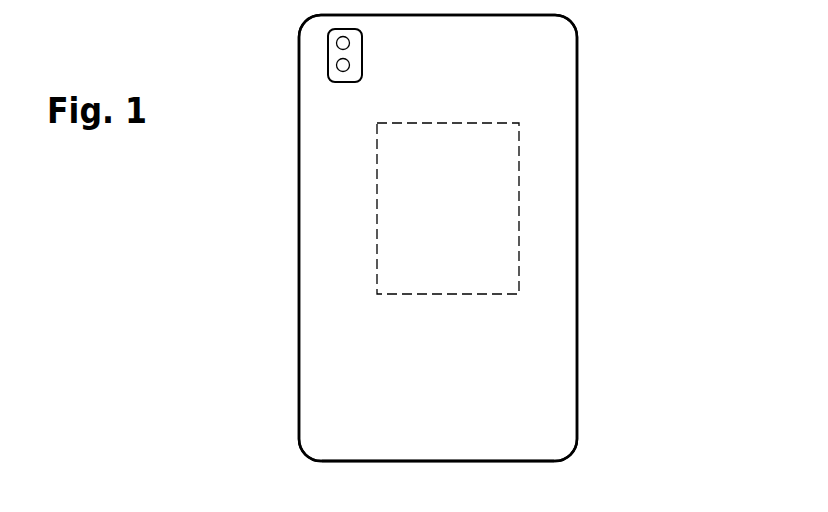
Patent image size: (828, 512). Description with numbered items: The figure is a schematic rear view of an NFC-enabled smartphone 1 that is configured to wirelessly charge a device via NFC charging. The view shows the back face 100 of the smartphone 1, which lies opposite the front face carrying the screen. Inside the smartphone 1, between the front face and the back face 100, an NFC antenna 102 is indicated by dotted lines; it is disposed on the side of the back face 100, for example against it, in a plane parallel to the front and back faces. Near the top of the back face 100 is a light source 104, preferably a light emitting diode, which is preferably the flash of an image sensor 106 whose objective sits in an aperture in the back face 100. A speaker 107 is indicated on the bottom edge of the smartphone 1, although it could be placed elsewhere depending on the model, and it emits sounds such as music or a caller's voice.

The smartphone 1 is at (613, 53).
The back face 100 is at (548, 429).
The NFC antenna 102 is at (519, 237).
The light source 104 is at (328, 34).
The image sensor 106 is at (328, 62).
The speaker 107 is at (364, 469).